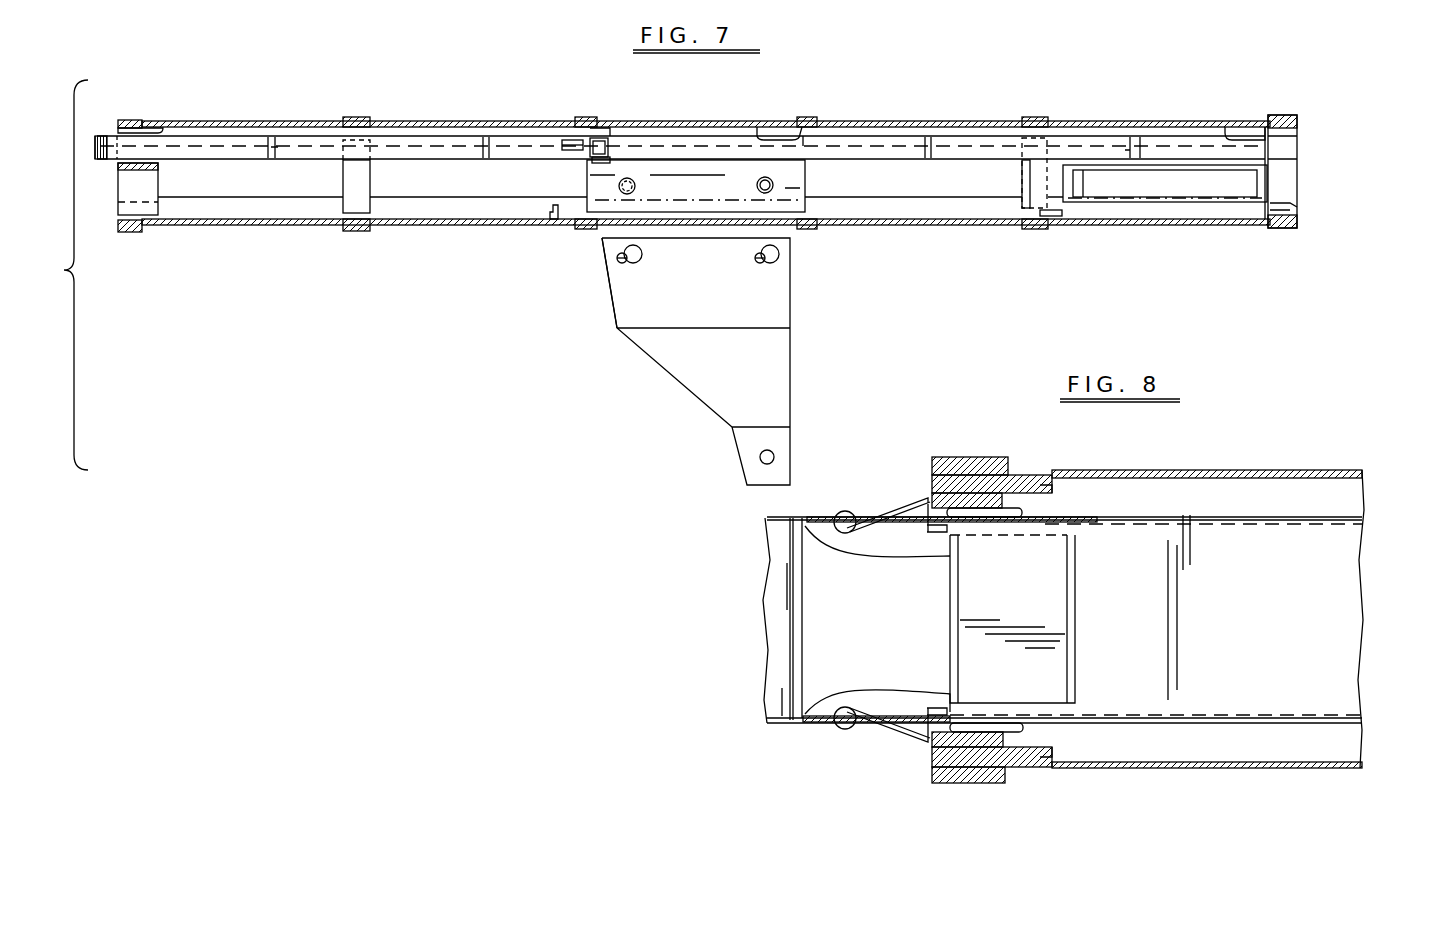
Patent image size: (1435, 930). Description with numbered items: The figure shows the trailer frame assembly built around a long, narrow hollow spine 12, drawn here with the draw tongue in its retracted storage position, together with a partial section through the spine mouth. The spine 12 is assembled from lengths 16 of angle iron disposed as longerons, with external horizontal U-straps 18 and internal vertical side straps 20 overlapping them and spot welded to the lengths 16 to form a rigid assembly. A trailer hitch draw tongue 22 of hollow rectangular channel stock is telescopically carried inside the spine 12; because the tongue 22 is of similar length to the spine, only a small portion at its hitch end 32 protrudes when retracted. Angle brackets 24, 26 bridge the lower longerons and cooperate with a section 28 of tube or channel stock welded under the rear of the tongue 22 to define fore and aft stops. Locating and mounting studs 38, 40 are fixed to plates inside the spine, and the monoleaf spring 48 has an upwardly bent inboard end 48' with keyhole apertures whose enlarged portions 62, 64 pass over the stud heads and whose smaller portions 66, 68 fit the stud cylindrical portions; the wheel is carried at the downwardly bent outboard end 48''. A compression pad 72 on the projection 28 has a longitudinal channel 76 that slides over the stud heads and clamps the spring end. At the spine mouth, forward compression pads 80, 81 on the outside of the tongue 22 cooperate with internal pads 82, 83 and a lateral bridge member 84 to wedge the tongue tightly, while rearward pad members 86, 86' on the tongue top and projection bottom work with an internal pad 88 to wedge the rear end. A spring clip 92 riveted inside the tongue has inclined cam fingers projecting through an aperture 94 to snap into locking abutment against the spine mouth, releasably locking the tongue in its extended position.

In FIG. 8, the spine 12 is at (1240, 460).
In FIG. 7, the lengths of angle iron 16 is at (400, 227).
In FIG. 8, the lengths of angle iron 16 is at (1170, 470).
In FIG. 7, the upper horizontal U-strap 18 is at (357, 119).
In FIG. 8, the upper horizontal U-strap 18 is at (965, 456).
In FIG. 7, the vertical side strap 20 is at (366, 184).
In FIG. 8, the vertical side strap 20 is at (1025, 484).
In FIG. 7, the trailer hitch draw tongue 22 is at (890, 130).
In FIG. 8, the trailer hitch draw tongue 22 is at (1224, 513).
In FIG. 7, the angle bracket 24 is at (551, 210).
In FIG. 7, the angle bracket 26 is at (1292, 206).
In FIG. 7, the section of tube or channel stock 28 is at (1030, 177).
In FIG. 7, the hitch end 32 is at (104, 134).
In FIG. 7, the locating and mounting stud 38 is at (635, 184).
In FIG. 7, the locating and mounting stud 40 is at (757, 185).
In FIG. 7, the tapering monoleaf spring 48 is at (733, 361).
In FIG. 7, the inboard end 48' is at (582, 291).
In FIG. 7, the outboard end 48'' is at (705, 466).
In FIG. 7, the enlarged portion 62 is at (645, 256).
In FIG. 7, the enlarged portion 64 is at (782, 252).
In FIG. 7, the smaller portion 66 is at (615, 259).
In FIG. 7, the smaller portion 68 is at (759, 264).
In FIG. 7, the compression pad 72 is at (1074, 186).
In FIG. 7, the channel 76 is at (1186, 186).
In FIG. 7, the forward compression pad 80 is at (612, 162).
In FIG. 8, the forward compression pad 80 is at (1058, 609).
In FIG. 8, the forward compression pad 81 is at (1020, 520).
In FIG. 7, the internally disposed pad 82 is at (148, 125).
In FIG. 8, the internally disposed pad 83 is at (1003, 499).
In FIG. 7, the lateral bridge member 84 is at (150, 170).
In FIG. 7, the rearward pad member 86 is at (1256, 101).
In FIG. 7, the rearward pad member 86' is at (1042, 241).
In FIG. 7, the pad 88 is at (792, 138).
In FIG. 7, the spring clip 92 is at (569, 139).
In FIG. 8, the spring clip 92 is at (906, 506).
In FIG. 8, the aperture 94 is at (903, 530).